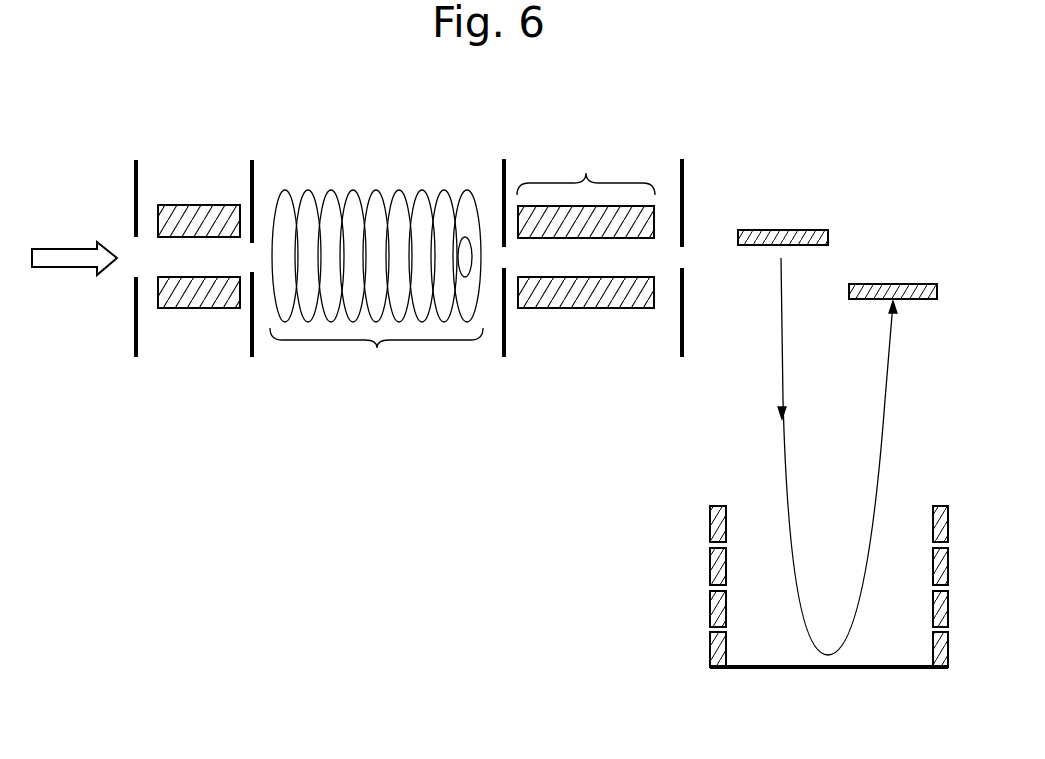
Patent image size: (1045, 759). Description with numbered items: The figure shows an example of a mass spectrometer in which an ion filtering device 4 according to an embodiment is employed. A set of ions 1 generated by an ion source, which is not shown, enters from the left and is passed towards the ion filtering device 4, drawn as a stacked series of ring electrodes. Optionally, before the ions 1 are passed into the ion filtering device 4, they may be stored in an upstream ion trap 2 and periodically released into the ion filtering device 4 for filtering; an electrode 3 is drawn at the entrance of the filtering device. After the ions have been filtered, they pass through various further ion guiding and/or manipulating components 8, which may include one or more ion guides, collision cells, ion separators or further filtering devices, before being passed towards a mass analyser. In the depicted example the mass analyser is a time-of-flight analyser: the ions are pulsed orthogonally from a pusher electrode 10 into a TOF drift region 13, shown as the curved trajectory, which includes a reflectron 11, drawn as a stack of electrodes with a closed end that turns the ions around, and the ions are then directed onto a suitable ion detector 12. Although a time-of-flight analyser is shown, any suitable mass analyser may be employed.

The ions 1 is at (67, 257).
The upstream ion trap 2 is at (189, 209).
The aperture electrode 3 is at (253, 170).
The ion filtering device 4 is at (376, 288).
The ion guiding and/or manipulating components 8 is at (586, 226).
The pusher electrode 10 is at (768, 229).
The reflectron 11 is at (778, 669).
The ion detector 12 is at (893, 284).
The TOF drift region 13 is at (762, 443).